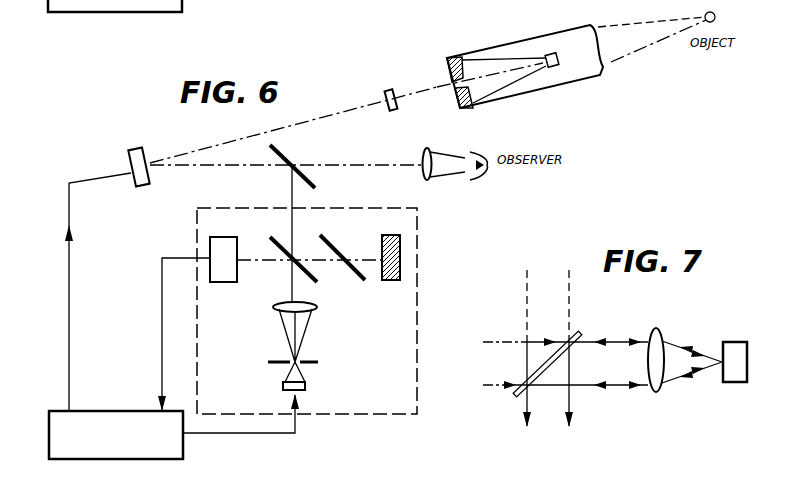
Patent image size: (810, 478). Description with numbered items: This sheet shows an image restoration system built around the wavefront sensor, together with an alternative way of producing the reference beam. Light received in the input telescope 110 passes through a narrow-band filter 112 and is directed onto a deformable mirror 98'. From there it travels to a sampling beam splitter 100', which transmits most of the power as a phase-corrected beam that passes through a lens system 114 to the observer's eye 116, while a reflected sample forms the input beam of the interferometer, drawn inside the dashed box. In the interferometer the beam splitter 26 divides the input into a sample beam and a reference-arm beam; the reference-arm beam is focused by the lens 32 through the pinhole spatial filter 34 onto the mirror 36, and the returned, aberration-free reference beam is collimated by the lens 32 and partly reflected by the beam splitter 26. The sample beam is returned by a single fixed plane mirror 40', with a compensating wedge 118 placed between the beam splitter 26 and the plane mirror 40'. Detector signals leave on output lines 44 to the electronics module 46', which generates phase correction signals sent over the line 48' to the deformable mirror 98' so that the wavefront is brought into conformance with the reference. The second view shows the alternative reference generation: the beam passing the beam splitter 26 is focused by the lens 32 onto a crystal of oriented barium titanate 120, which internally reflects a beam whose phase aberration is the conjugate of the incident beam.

In FIG. 6, the deformable mirror 98' is at (111, 156).
In FIG. 6, the narrow-band filter 112 is at (398, 91).
In FIG. 6, the input telescope 110 is at (538, 88).
In FIG. 6, the sampling beam splitter 100' is at (308, 162).
In FIG. 6, the lens system 114 is at (423, 172).
In FIG. 6, the observer's eye 116 is at (478, 172).
In FIG. 6, the compensating wedge 118 is at (347, 243).
In FIG. 6, the line 48' is at (98, 292).
In FIG. 6, the output lines 44 is at (162, 340).
In FIG. 6, the fixed plane mirror 40' is at (388, 283).
In FIG. 6, the lens 32 is at (282, 313).
In FIG. 7, the lens 32 is at (663, 338).
In FIG. 6, the pinhole spatial filter 34 is at (312, 364).
In FIG. 6, the mirror 36 is at (305, 388).
In FIG. 6, the electronics module 46' is at (116, 420).
In FIG. 7, the beam splitter 26 is at (580, 333).
In FIG. 7, the barium titanate crystal 120 is at (727, 383).